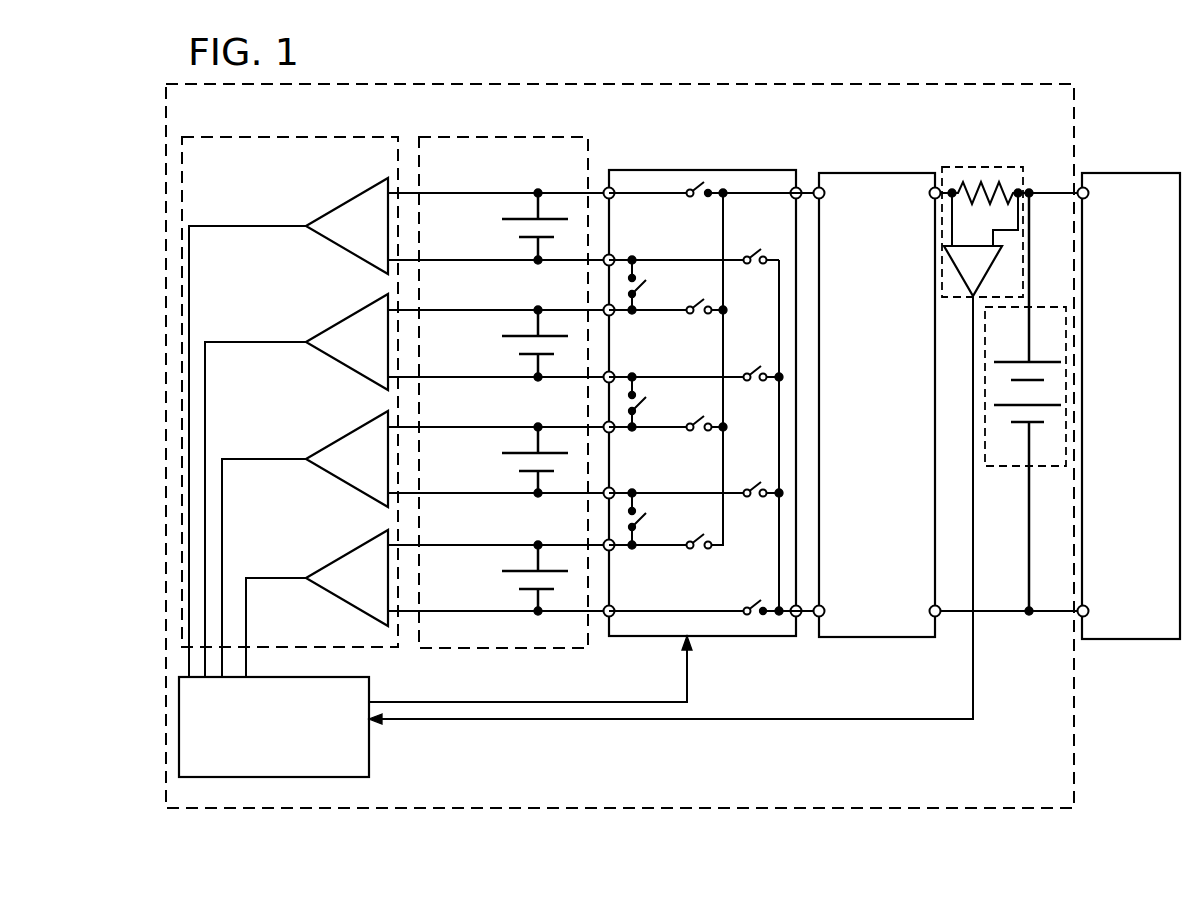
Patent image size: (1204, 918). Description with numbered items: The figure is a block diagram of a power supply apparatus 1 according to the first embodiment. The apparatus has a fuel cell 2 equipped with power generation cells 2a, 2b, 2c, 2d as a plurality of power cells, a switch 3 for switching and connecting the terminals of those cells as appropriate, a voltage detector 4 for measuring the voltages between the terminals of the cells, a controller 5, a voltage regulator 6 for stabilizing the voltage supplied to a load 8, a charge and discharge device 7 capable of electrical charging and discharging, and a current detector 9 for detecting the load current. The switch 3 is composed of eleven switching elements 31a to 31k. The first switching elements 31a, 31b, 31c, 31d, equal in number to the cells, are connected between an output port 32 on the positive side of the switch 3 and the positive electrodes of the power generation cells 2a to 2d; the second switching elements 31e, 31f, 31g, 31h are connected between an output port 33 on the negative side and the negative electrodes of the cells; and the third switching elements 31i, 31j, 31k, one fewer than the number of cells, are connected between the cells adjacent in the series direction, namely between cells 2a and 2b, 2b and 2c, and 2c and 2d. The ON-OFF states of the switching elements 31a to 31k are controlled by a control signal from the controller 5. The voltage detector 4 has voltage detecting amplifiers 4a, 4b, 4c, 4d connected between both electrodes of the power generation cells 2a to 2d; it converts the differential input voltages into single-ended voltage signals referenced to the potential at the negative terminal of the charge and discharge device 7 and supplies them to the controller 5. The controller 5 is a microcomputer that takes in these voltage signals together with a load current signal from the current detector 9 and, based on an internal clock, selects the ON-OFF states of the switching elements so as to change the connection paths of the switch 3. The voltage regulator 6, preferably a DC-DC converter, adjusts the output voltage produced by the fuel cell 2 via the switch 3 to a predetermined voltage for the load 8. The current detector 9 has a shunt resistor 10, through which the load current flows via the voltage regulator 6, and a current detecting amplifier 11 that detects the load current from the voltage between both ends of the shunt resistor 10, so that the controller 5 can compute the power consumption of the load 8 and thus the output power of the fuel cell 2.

The power supply apparatus 1 is at (1074, 773).
The fuel cell 2 is at (512, 650).
The power generation cell 2a is at (522, 222).
The power generation cell 2b is at (522, 339).
The power generation cell 2c is at (522, 456).
The power generation cell 2d is at (522, 574).
The switch 3 is at (727, 637).
The voltage detector 4 is at (284, 137).
The voltage detecting amplifier 4a is at (340, 193).
The voltage detecting amplifier 4b is at (340, 309).
The voltage detecting amplifier 4c is at (336, 426).
The voltage detecting amplifier 4d is at (336, 545).
The controller 5 is at (370, 755).
The voltage regulator 6 is at (857, 172).
The charge and discharge device 7 is at (1052, 307).
The load 8 is at (1137, 641).
The current detector 9 is at (963, 167).
The shunt resistor 10 is at (980, 188).
The current detecting amplifier 11 is at (957, 300).
The first switching element 31a is at (713, 184).
The first switching element 31b is at (705, 295).
The first switching element 31c is at (705, 412).
The first switching element 31d is at (705, 530).
The second switching element 31e is at (756, 254).
The second switching element 31f is at (762, 362).
The second switching element 31g is at (762, 478).
The second switching element 31h is at (762, 596).
The third switching element 31i is at (653, 278).
The third switching element 31j is at (653, 395).
The third switching element 31k is at (653, 511).
The output port on the positive side 32 is at (806, 168).
The output port on the negative side 33 is at (797, 638).